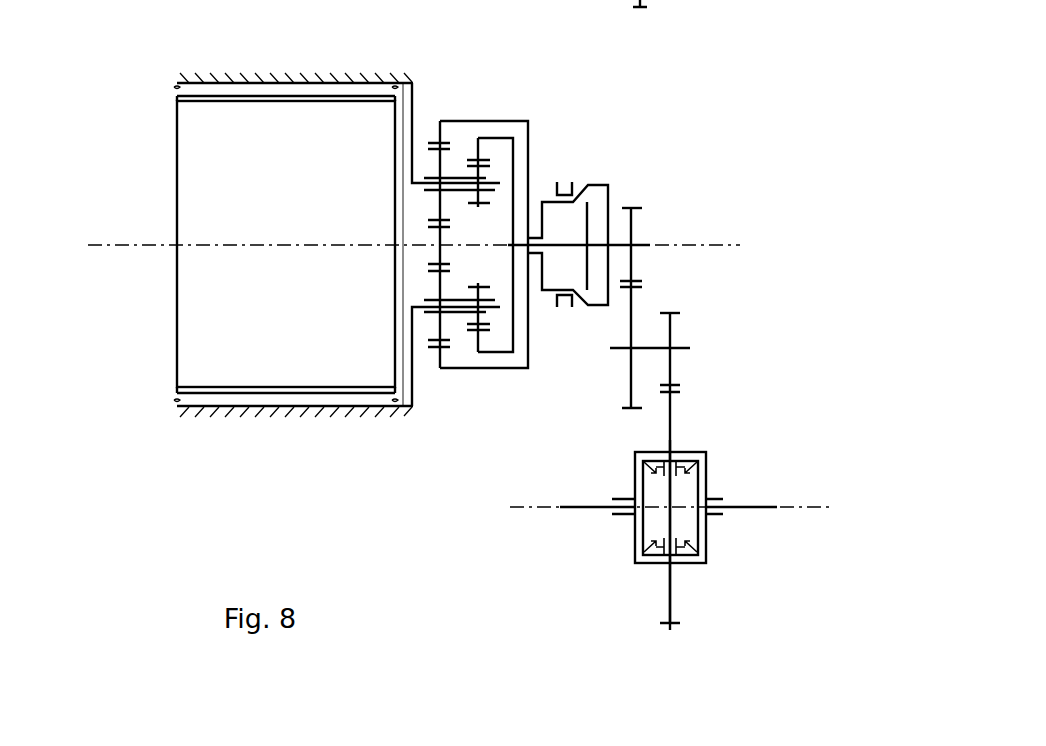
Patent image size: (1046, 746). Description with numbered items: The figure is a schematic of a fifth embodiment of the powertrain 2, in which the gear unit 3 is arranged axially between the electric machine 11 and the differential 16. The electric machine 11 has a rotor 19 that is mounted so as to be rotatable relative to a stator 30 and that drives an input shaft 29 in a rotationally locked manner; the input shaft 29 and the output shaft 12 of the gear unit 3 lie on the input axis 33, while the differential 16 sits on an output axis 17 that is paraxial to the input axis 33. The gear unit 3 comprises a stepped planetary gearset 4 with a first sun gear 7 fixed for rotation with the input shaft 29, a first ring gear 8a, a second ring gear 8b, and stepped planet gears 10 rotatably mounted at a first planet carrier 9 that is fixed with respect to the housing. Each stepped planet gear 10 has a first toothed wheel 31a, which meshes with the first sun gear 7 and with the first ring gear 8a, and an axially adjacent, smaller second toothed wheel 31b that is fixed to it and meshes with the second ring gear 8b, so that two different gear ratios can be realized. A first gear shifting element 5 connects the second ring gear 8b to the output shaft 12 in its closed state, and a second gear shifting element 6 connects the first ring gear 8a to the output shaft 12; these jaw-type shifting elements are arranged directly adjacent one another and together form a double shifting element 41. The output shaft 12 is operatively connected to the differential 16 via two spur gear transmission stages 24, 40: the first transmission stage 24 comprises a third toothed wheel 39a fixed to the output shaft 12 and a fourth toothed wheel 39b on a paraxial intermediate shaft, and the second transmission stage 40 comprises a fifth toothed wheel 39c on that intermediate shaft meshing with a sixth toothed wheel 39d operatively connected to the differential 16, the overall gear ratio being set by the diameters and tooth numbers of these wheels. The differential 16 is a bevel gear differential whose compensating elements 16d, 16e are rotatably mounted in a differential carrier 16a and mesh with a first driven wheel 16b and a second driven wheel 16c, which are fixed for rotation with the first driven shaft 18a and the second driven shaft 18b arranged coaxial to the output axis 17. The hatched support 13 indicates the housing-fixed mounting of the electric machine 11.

The powertrain 2 is at (229, 246).
The gear unit 3 is at (446, 402).
The stepped planetary gearset 4 is at (460, 355).
The first gear shifting element 5 is at (591, 181).
The second gear shifting element 6 is at (559, 178).
The first sun gear 7 is at (432, 262).
The first ring gear 8a is at (430, 140).
The second ring gear 8b is at (474, 157).
The first planet carrier 9 is at (413, 300).
The stepped planet gear 10 is at (455, 175).
The electric machine 11 is at (168, 410).
The output shaft 12 is at (615, 244).
The top support 13 is at (215, 80).
The differential 16 is at (636, 575).
The differential carrier 16a is at (648, 452).
The first driven wheel 16b is at (645, 483).
The second driven wheel 16c is at (700, 535).
The compensating element 16d is at (684, 466).
The compensating element 16e is at (690, 555).
The output axis 17 is at (512, 507).
The first driven shaft 18a is at (595, 508).
The second driven shaft 18b is at (762, 505).
The rotor 19 is at (200, 148).
The first transmission stage 24 is at (654, 221).
The input shaft 29 is at (414, 82).
The stator 30 is at (177, 88).
The first toothed wheel 31a is at (424, 335).
The second toothed wheel 31b is at (458, 325).
The input axis 33 is at (118, 248).
The third toothed wheel 39a is at (641, 205).
The fourth toothed wheel 39b is at (636, 290).
The fifth toothed wheel 39c is at (680, 313).
The sixth toothed wheel 39d is at (680, 392).
The second transmission stage 40 is at (710, 378).
The double shifting element 41 is at (573, 312).